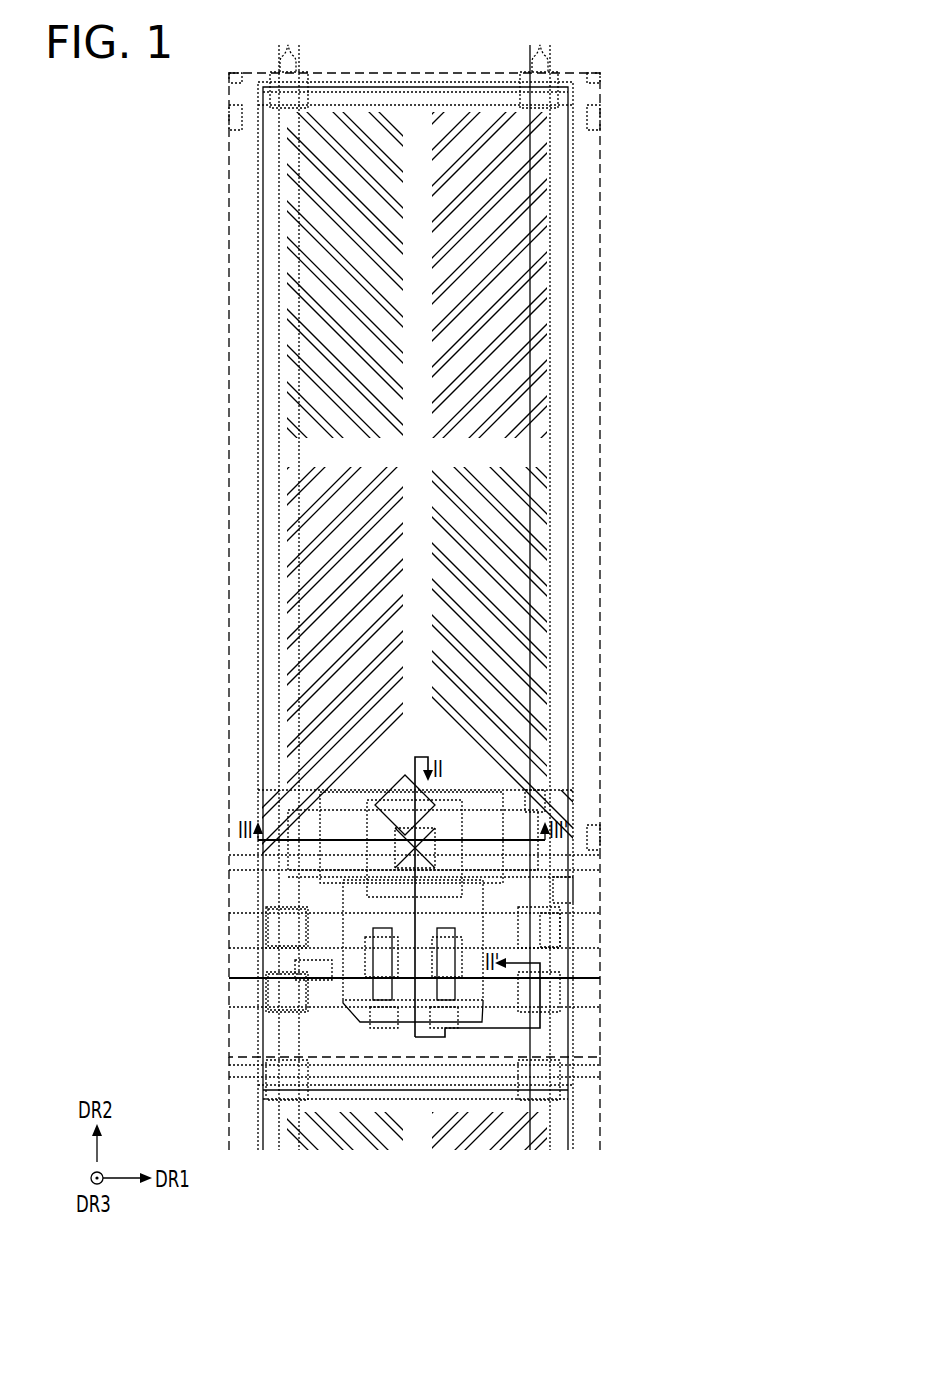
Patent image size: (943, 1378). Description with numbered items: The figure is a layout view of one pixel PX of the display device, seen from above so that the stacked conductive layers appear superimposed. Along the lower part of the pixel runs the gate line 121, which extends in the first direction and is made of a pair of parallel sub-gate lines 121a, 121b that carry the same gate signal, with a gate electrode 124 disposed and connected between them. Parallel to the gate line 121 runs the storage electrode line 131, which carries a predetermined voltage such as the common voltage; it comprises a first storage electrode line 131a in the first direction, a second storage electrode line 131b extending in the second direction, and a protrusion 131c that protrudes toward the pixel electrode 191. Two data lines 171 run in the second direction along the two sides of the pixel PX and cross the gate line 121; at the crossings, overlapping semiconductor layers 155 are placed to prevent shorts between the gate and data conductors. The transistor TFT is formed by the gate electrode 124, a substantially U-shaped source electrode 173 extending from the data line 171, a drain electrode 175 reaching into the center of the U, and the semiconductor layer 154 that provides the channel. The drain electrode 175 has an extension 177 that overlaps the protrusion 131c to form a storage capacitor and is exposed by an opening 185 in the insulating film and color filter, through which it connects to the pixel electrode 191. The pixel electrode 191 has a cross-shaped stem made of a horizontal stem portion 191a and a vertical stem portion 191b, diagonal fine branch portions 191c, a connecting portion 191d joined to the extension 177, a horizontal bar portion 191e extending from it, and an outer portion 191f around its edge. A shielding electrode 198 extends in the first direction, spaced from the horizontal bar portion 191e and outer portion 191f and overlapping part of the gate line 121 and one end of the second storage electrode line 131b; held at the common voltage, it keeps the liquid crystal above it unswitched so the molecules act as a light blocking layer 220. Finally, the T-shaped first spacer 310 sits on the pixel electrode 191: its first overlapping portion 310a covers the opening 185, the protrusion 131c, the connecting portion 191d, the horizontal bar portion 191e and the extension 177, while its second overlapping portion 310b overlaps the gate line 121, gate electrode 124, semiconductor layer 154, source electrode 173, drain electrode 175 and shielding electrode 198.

The data line 171 is at (413, 583).
The pixel electrode 191 is at (471, 689).
The horizontal stem portion 191a is at (520, 452).
The vertical stem portion 191b is at (410, 263).
The fine branch portion 191c is at (520, 372).
The connecting portion 191d is at (520, 790).
The horizontal bar portion 191e is at (562, 885).
The outer portion 191f is at (553, 535).
The storage electrode line 131 is at (497, 616).
The first storage electrode line 131a is at (225, 853).
The second storage electrode line 131b is at (592, 193).
The protrusion 131c is at (360, 830).
The light blocking layer 220 is at (345, 803).
The extension 177 is at (543, 803).
The opening 185 is at (545, 857).
The first spacer 310 is at (501, 932).
The first overlapping portion 310a is at (552, 878).
The second overlapping portion 310b is at (505, 937).
The shielding electrode 198 is at (606, 1005).
The gate line 121 is at (359, 959).
The sub-gate line 121a is at (225, 915).
The sub-gate line 121b is at (385, 992).
The overlapping semiconductor layer 155 is at (265, 997).
The gate electrode 124 is at (338, 960).
The semiconductor layer 154 is at (372, 988).
The source electrode 173 is at (442, 990).
The drain electrode 175 is at (455, 950).
The pixel PX is at (396, 70).
The transistor TFT is at (460, 1200).